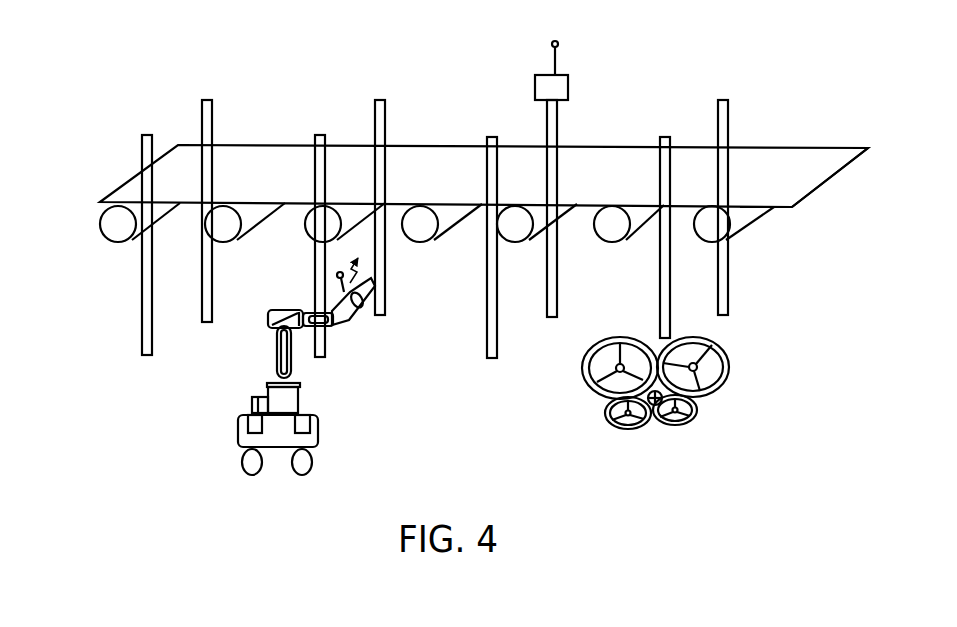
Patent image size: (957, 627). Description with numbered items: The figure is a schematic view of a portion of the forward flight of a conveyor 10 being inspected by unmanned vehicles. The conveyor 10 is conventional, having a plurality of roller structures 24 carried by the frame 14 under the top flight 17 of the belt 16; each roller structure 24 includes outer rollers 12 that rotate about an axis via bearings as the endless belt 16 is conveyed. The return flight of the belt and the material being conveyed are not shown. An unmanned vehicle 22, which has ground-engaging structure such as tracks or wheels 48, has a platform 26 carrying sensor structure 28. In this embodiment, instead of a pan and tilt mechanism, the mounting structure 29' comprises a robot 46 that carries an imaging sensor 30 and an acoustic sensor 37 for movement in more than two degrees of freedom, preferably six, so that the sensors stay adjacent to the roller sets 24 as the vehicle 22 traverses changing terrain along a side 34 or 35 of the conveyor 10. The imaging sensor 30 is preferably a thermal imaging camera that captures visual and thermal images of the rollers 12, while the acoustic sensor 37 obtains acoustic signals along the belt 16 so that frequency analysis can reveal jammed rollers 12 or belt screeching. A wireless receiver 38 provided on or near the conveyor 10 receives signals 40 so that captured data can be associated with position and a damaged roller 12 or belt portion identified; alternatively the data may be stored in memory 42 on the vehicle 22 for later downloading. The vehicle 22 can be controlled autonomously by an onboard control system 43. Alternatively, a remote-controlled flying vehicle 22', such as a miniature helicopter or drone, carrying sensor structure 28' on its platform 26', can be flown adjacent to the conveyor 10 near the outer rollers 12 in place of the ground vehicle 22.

The conveyor 10 is at (461, 186).
The outer rollers 12 is at (108, 225).
The frame 14 is at (497, 322).
The belt 16 is at (280, 153).
The top flight 17 is at (729, 184).
The unmanned vehicle 22 is at (299, 382).
The flying vehicle 22' is at (676, 416).
The roller structures 24 is at (418, 241).
The platform 26 is at (303, 396).
The platform 26' is at (651, 440).
The sensor structure 28 is at (312, 325).
The sensor structure 28' is at (676, 368).
The mounting structure 29' is at (247, 354).
The imaging sensor 30 is at (360, 312).
The side 34 is at (785, 210).
The side 35 is at (815, 147).
The acoustic sensor 37 is at (368, 283).
The wireless receiver 38 is at (568, 85).
The signals 40 is at (565, 58).
The memory 42 is at (310, 432).
The onboard control system 43 is at (246, 422).
The robot 46 is at (284, 315).
The wheels 48 is at (312, 468).